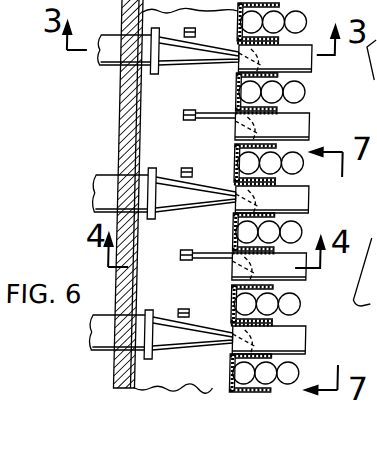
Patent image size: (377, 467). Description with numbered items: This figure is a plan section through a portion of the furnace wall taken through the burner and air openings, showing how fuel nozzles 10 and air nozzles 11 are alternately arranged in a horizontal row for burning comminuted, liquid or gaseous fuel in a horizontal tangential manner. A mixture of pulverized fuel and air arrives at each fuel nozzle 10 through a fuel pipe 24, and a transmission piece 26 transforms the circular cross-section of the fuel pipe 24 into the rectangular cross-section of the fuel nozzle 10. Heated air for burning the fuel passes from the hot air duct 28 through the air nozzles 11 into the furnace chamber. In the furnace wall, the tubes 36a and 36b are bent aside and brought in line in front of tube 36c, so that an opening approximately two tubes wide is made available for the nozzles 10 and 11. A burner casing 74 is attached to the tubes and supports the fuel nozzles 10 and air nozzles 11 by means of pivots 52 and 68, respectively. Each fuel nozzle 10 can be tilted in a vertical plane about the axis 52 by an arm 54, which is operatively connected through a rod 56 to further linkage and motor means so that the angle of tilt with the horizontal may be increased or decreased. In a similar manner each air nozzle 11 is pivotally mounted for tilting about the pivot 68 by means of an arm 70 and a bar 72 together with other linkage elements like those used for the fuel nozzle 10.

The fuel nozzle 10 is at (311, 44).
The air nozzle 11 is at (311, 112).
The fuel pipe 24 is at (98, 66).
The transmission piece 26 is at (200, 60).
The hot air duct 28 is at (143, 150).
The tube 36a is at (299, 385).
The tube 36b is at (275, 385).
The tube 36c is at (254, 385).
The axis 52 is at (260, 59).
The arm 54 is at (235, 40).
The rod 56 is at (189, 29).
The pivot 68 is at (257, 134).
The arm 70 is at (232, 120).
The bar 72 is at (186, 116).
The burner casing 74 is at (282, 78).